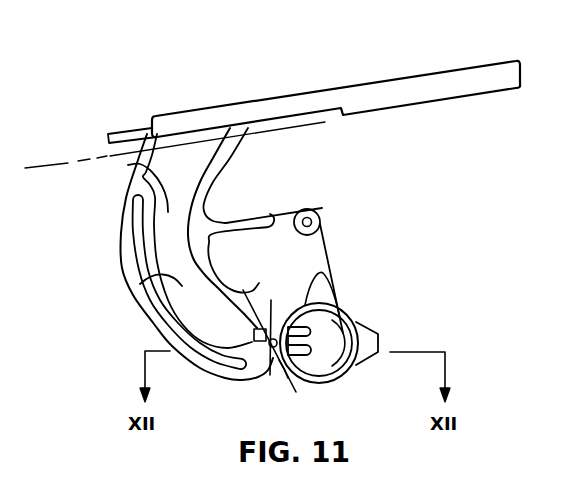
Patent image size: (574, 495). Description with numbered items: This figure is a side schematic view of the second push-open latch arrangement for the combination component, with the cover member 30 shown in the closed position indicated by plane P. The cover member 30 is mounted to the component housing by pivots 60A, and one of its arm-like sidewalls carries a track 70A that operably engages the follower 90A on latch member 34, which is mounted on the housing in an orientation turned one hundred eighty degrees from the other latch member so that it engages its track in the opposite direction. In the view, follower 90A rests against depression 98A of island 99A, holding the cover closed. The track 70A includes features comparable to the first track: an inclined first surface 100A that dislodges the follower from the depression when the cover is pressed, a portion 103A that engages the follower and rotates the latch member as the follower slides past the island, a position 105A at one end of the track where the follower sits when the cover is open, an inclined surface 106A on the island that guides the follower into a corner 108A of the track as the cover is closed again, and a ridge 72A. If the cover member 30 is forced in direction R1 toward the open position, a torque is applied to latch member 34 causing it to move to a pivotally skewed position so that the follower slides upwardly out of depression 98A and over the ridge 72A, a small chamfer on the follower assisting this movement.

The cover member 30 is at (399, 74).
The latch member 34 is at (338, 381).
The pivots 60A is at (318, 210).
The track 70A is at (128, 287).
The ridge 72A is at (152, 247).
The follower 90A is at (271, 300).
The depression 98A is at (271, 352).
The island 99A is at (176, 288).
The inclined first surface 100A is at (255, 333).
The portion of track 103A is at (212, 262).
The position at end of track 105A is at (128, 165).
The inclined surface on island 106A is at (256, 333).
The corner of track 108A is at (277, 352).
The plane P is at (50, 163).
The direction R1 is at (462, 1).